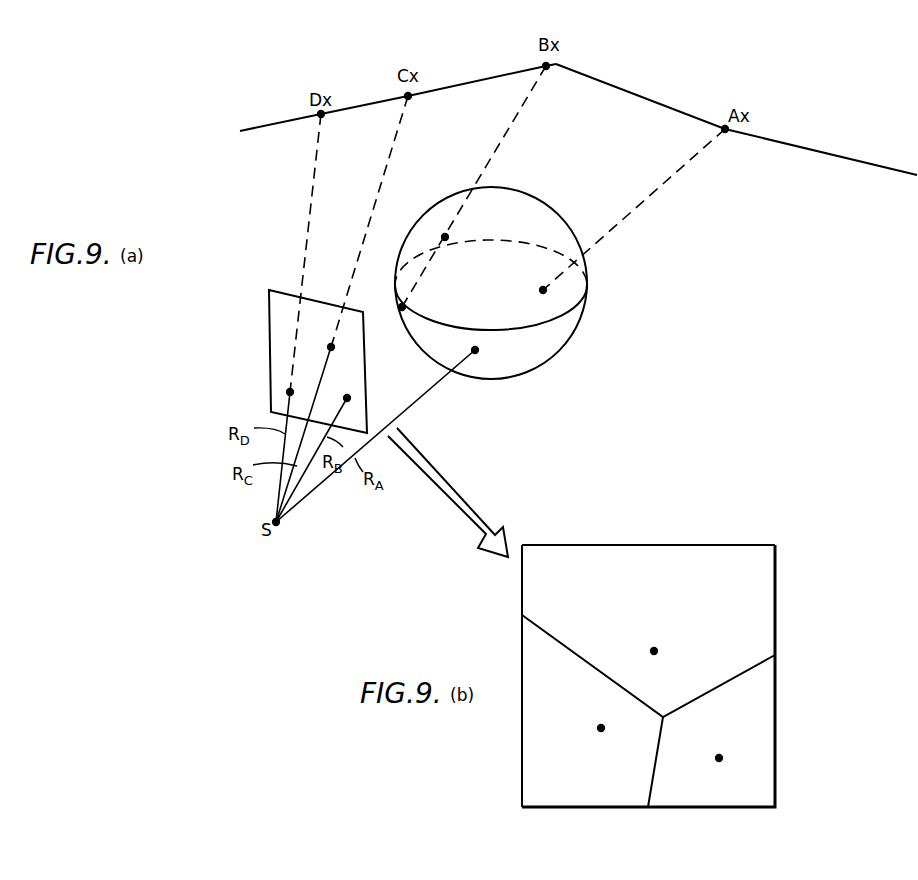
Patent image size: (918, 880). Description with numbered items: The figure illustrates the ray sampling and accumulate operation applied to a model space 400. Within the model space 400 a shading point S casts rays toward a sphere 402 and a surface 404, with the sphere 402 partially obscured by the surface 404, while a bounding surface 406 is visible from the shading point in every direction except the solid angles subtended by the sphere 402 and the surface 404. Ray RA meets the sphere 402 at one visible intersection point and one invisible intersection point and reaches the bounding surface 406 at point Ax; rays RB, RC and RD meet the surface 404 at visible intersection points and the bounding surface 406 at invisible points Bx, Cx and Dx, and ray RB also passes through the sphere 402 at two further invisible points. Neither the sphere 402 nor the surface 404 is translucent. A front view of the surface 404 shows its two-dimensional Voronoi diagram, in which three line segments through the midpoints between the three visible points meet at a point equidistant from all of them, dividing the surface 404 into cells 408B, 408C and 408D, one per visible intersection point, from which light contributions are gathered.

In FIG. 9A, the model space 400 is at (318, 70).
In FIG. 9A, the sphere 402 is at (528, 197).
In FIG. 9A, the surface 404 is at (268, 312).
In FIG. 9B, the surface 404 is at (762, 545).
In FIG. 9A, the bounding surface 406 is at (668, 108).
In FIG. 9B, the cell 408C is at (640, 557).
In FIG. 9B, the cell 408D is at (605, 793).
In FIG. 9B, the cell 408B is at (713, 793).